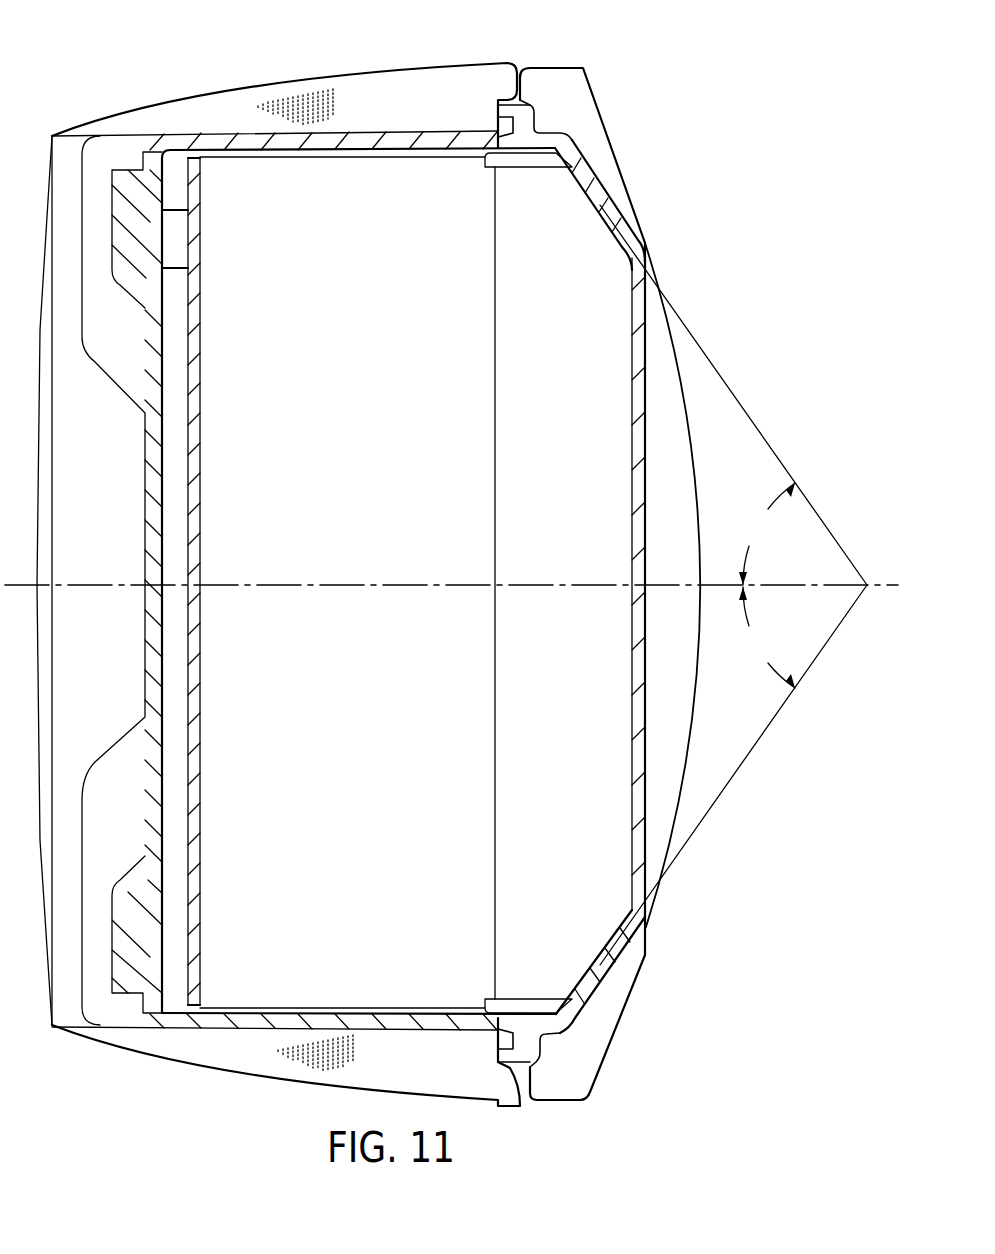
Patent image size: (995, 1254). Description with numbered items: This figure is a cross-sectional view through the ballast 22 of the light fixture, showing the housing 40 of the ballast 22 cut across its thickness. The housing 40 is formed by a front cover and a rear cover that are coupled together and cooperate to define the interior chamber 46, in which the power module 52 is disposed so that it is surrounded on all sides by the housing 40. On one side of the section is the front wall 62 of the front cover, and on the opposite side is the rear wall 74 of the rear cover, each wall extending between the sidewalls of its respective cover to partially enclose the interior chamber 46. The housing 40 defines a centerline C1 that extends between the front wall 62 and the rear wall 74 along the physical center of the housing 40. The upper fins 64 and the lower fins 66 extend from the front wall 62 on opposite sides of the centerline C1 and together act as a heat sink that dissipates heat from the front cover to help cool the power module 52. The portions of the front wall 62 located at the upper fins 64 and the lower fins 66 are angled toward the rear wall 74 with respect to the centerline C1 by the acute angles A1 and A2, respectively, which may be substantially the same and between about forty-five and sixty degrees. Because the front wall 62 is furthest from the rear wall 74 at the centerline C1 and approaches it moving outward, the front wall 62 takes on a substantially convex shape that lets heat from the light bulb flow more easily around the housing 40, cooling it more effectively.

The ballast 22 is at (193, 78).
The housing 40 is at (196, 1080).
The interior chamber 46 is at (457, 465).
The power module 52 is at (229, 378).
The front wall 62 is at (607, 207).
The upper fins 64 is at (588, 118).
The lower fins 66 is at (597, 1023).
The rear wall 74 is at (150, 500).
The acute angle A1 is at (733, 395).
The acute angle A2 is at (733, 775).
The centerline C1 is at (466, 585).